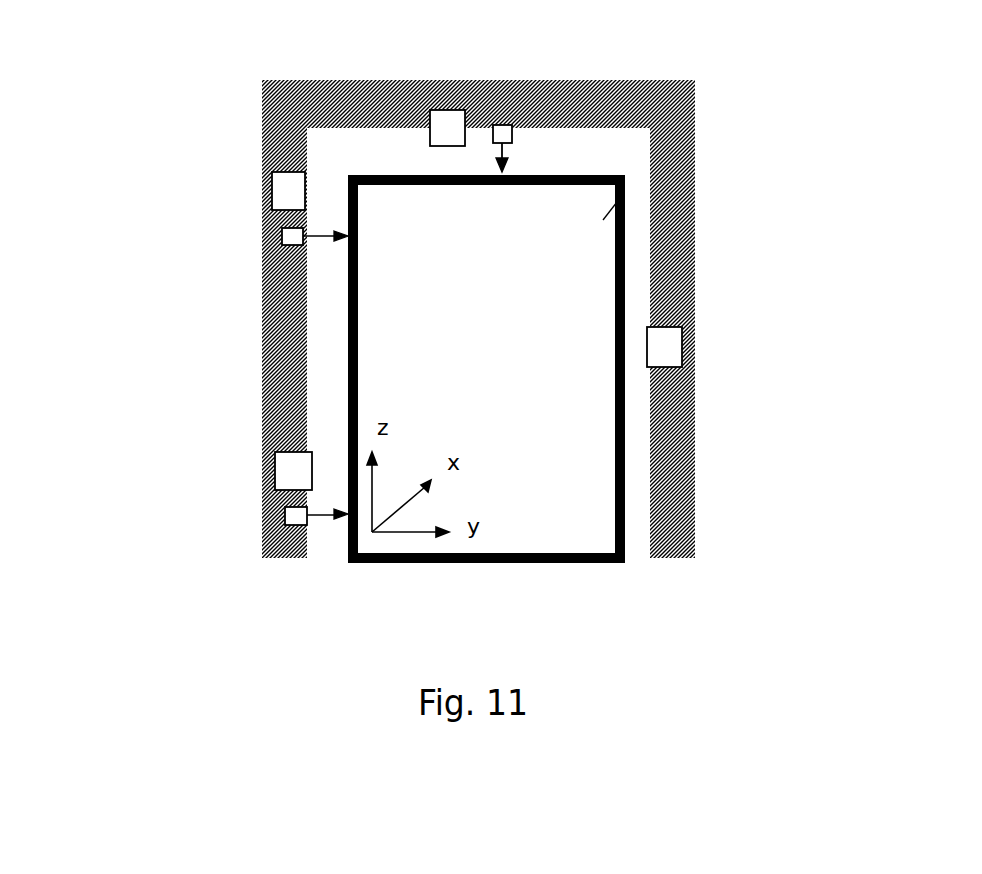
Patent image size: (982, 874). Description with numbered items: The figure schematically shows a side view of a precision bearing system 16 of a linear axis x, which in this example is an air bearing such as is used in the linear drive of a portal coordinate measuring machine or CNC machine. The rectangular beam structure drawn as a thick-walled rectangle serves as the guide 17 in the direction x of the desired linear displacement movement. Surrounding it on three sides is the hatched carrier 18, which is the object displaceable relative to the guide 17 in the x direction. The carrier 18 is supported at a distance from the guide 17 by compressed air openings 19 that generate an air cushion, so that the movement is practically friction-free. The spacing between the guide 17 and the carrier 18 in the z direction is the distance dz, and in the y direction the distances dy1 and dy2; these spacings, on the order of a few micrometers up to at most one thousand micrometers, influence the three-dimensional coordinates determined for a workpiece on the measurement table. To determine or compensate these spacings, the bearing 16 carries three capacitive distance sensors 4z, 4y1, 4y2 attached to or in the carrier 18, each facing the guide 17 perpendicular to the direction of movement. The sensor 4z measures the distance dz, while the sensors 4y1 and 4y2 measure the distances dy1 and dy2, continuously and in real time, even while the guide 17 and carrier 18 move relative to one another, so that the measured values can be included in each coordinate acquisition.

The precision bearing system 16 is at (237, 68).
The guide 17 is at (623, 190).
The carrier 18 is at (668, 182).
The compressed air openings 19 is at (442, 133).
The capacitive distance sensor 4z is at (503, 130).
The distance in the z direction dz is at (505, 166).
The capacitive distance sensor 4y1 is at (285, 515).
The capacitive distance sensor 4y2 is at (282, 235).
The distance in the y direction dy1 is at (322, 513).
The distance in the y direction dy2 is at (322, 238).